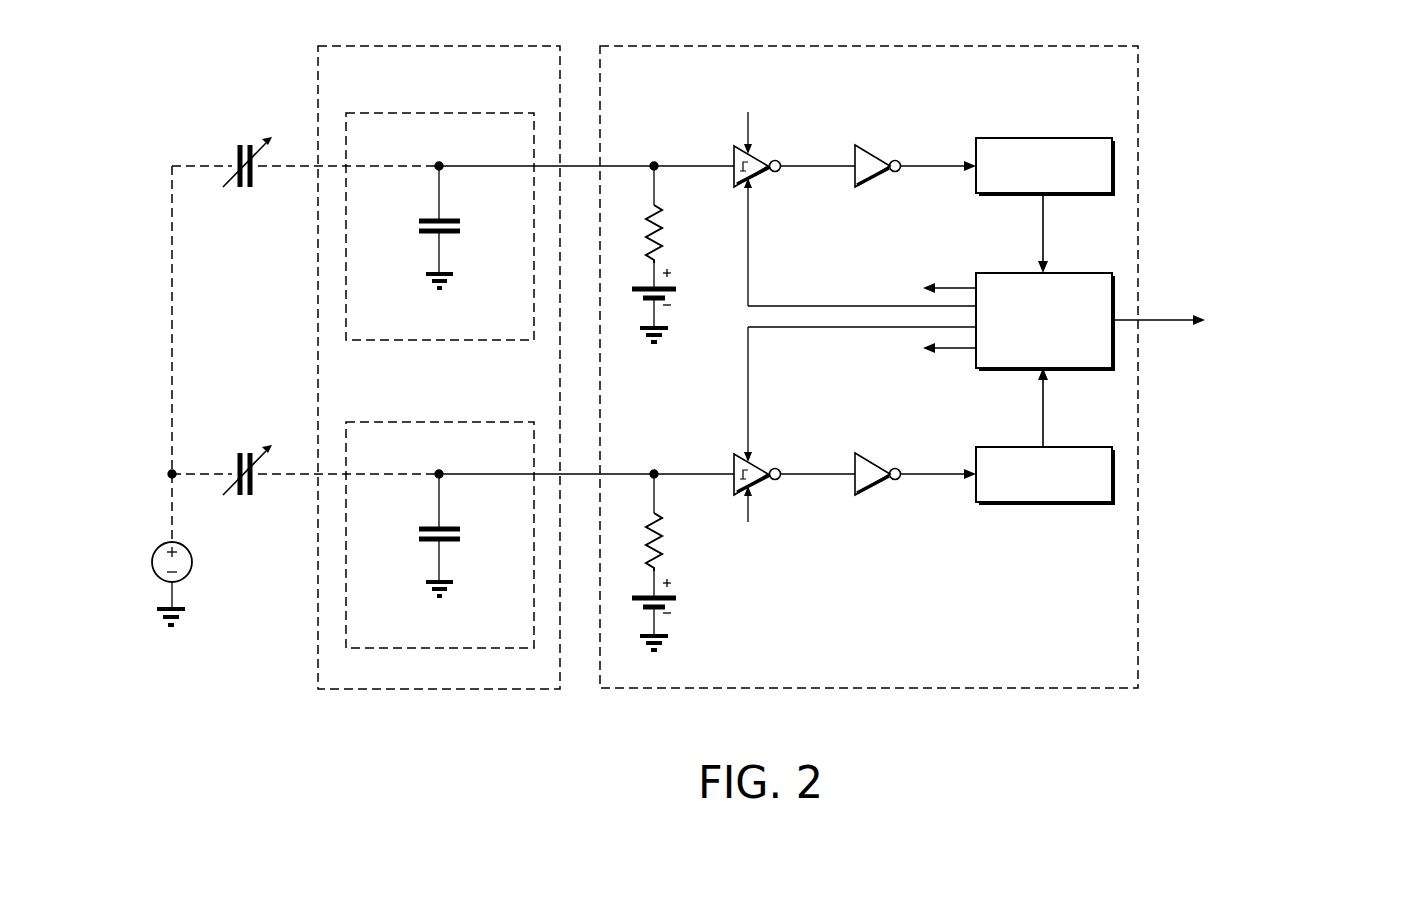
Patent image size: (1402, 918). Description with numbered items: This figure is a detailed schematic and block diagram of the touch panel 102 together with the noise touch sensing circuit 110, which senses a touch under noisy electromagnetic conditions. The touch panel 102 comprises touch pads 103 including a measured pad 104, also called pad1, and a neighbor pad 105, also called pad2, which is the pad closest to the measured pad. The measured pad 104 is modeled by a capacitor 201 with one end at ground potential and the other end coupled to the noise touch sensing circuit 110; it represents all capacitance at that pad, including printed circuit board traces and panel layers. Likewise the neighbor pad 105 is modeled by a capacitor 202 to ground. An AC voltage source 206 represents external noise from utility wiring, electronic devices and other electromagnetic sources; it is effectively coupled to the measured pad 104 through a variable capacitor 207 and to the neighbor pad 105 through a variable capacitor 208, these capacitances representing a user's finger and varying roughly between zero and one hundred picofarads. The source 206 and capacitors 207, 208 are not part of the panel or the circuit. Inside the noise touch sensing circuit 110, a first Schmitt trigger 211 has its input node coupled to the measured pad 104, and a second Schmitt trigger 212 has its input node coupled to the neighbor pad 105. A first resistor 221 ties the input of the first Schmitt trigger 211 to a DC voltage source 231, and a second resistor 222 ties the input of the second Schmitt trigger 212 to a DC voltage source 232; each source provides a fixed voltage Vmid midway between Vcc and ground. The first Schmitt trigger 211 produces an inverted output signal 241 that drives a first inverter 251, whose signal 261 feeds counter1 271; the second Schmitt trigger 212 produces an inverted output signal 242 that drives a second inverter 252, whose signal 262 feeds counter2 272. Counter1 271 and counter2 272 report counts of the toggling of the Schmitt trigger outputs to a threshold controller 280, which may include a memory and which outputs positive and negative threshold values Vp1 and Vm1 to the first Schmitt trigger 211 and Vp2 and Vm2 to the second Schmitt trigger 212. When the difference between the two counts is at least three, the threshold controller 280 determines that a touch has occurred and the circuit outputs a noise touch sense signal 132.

The touch panel 102 is at (500, 46).
The touch pads 103 is at (389, 380).
The measured pad 104 is at (465, 340).
The neighbor pad 105 is at (492, 422).
The noise touch sensing circuit 110 is at (1138, 570).
The noise touch sense signal 132 is at (1157, 320).
The capacitor 201 is at (455, 221).
The capacitor 202 is at (455, 529).
The AC voltage source 206 is at (164, 542).
The variable capacitor 207 is at (240, 145).
The variable capacitor 208 is at (240, 455).
The first Schmitt trigger 211 is at (733, 150).
The second Schmitt trigger 212 is at (733, 458).
The first resistor 221 is at (668, 237).
The second resistor 222 is at (668, 545).
The DC voltage source 231 is at (675, 300).
The DC voltage source 232 is at (677, 610).
The inverted output signal 241 is at (807, 168).
The inverted output signal 242 is at (807, 476).
The first inverter 251 is at (873, 151).
The second inverter 252 is at (873, 460).
The signal 261 is at (928, 168).
The signal 262 is at (928, 476).
The counter1 271 is at (1083, 138).
The counter2 272 is at (1083, 447).
The threshold controller 280 is at (1083, 273).